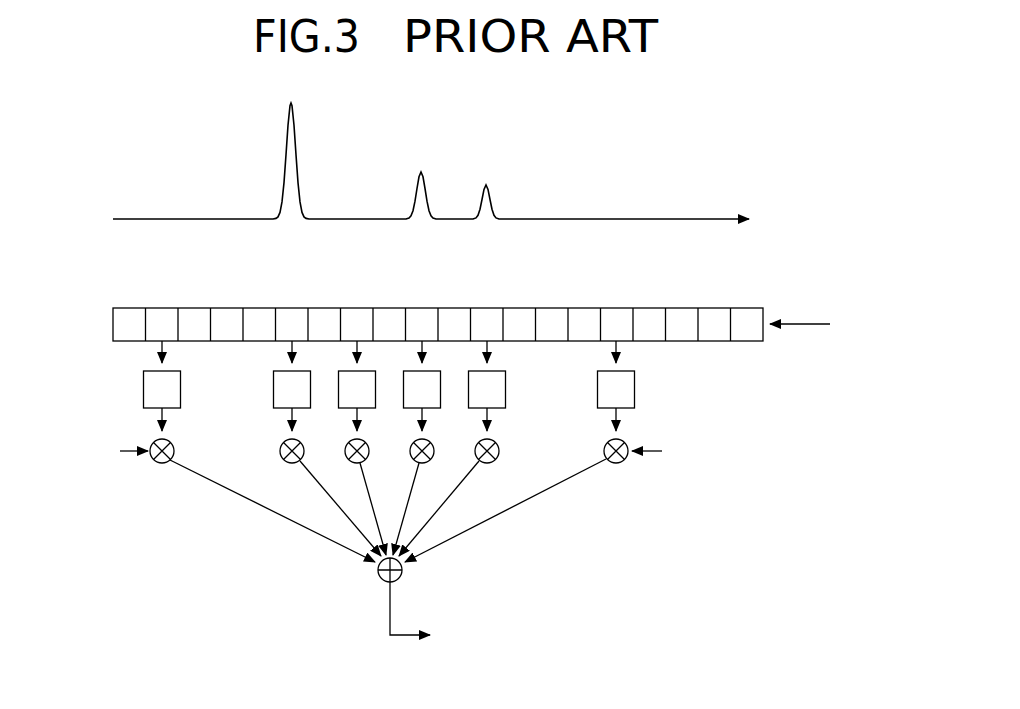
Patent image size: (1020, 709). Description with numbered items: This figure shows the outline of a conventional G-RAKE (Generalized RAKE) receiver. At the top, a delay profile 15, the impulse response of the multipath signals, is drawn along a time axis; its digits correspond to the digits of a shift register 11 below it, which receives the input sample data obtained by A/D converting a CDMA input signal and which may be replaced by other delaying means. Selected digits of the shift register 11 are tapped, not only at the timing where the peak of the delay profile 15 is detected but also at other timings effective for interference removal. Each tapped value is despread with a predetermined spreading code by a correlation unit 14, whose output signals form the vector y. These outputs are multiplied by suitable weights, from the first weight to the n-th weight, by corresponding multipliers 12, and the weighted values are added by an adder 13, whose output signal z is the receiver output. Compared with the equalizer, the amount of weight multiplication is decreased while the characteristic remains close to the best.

The delay profile 15 is at (104, 158).
The shift register 11 is at (100, 296).
The correlation unit 14 is at (143, 393).
The multiplier 12 is at (157, 463).
The adder 13 is at (380, 584).